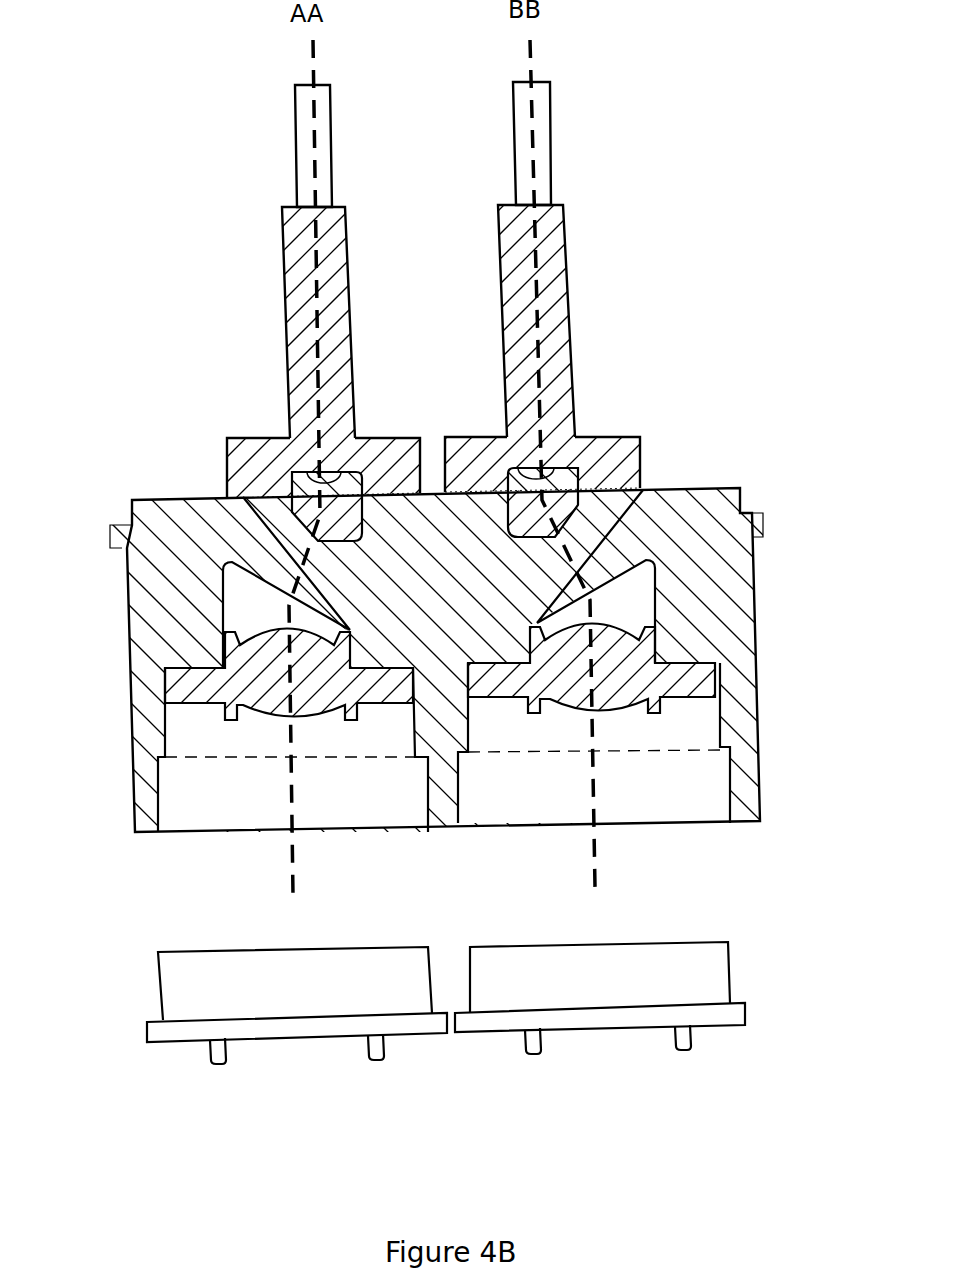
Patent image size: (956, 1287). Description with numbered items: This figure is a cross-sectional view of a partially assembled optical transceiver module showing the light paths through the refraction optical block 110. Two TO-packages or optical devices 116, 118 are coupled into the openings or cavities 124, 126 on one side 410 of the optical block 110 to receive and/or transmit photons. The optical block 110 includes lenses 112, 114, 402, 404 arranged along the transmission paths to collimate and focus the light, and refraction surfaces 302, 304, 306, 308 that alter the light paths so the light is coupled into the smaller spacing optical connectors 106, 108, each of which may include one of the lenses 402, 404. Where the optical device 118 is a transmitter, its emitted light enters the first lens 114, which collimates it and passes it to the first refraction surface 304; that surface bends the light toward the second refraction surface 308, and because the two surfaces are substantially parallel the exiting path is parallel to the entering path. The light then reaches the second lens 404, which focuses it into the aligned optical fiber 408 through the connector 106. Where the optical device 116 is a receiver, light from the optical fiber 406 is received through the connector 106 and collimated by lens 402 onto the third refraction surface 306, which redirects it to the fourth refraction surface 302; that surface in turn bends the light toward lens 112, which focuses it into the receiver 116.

The optical connector 106 is at (568, 313).
The optical connector 108 is at (283, 318).
The refraction optical block 110 is at (755, 642).
The lens 112 is at (530, 715).
The first lens 114 is at (350, 720).
The optical device 116 is at (733, 1027).
The optical device 118 is at (172, 1042).
The cavity 124 is at (678, 822).
The cavity 126 is at (208, 830).
The fourth refraction surface 302 is at (605, 580).
The first refraction surface 304 is at (278, 594).
The third refraction surface 306 is at (578, 515).
The second refraction surface 308 is at (300, 522).
The lens 402 is at (590, 470).
The second lens 404 is at (300, 480).
The optical fiber 406 is at (552, 110).
The optical fiber 408 is at (293, 125).
The side 410 is at (448, 822).